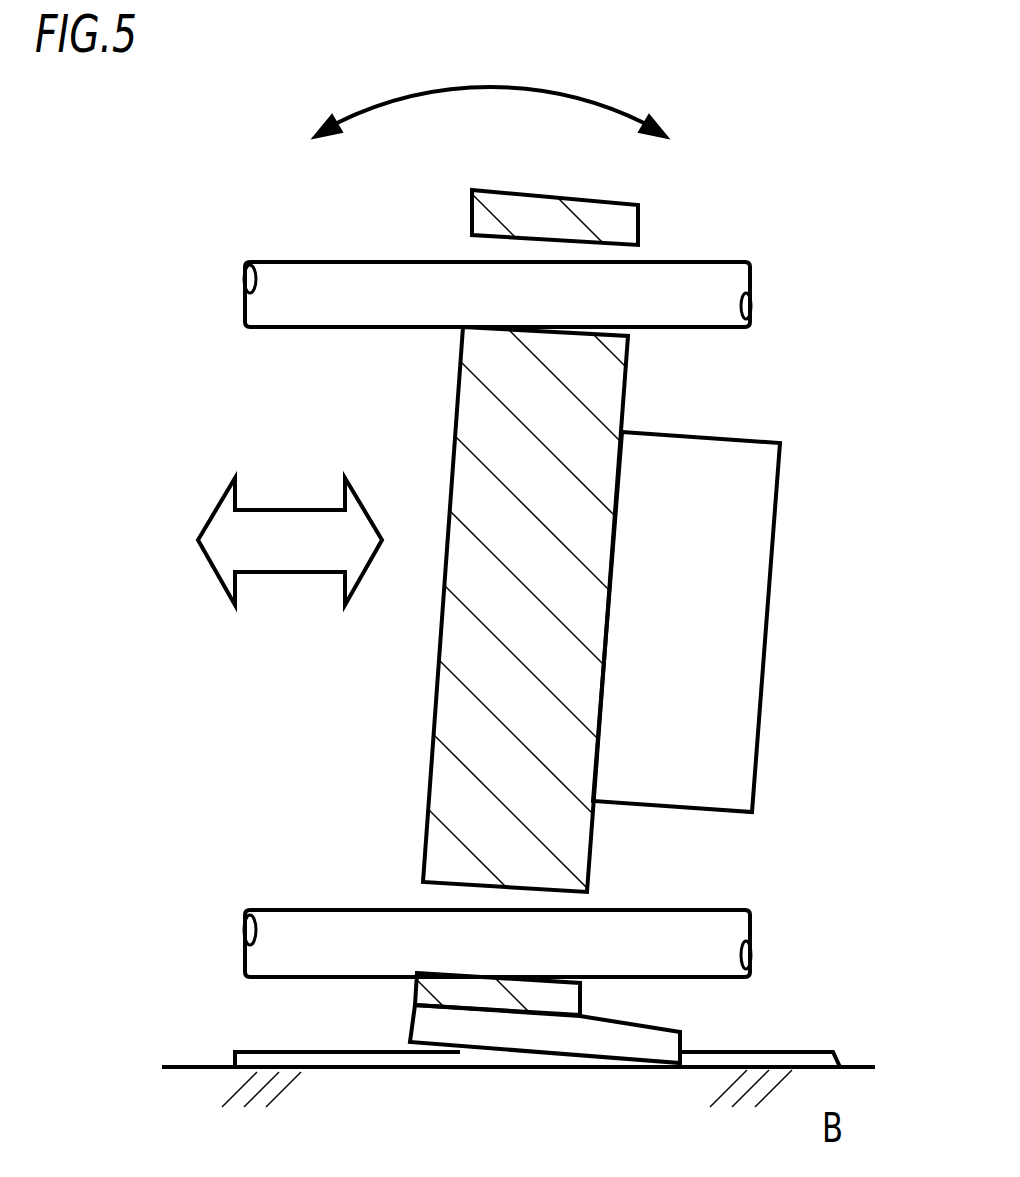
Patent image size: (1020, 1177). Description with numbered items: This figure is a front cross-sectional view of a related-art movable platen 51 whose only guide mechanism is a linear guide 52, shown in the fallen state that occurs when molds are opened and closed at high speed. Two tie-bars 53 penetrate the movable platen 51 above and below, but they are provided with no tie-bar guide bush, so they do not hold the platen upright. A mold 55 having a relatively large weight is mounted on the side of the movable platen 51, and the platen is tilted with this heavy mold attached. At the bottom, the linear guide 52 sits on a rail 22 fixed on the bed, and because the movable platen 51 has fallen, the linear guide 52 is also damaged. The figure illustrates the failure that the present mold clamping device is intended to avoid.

The movable platen 51 is at (453, 440).
The linear guide 52 is at (545, 1045).
The tie-bars 53 is at (273, 258).
The mold 55 is at (745, 588).
The rail 22 is at (797, 1053).